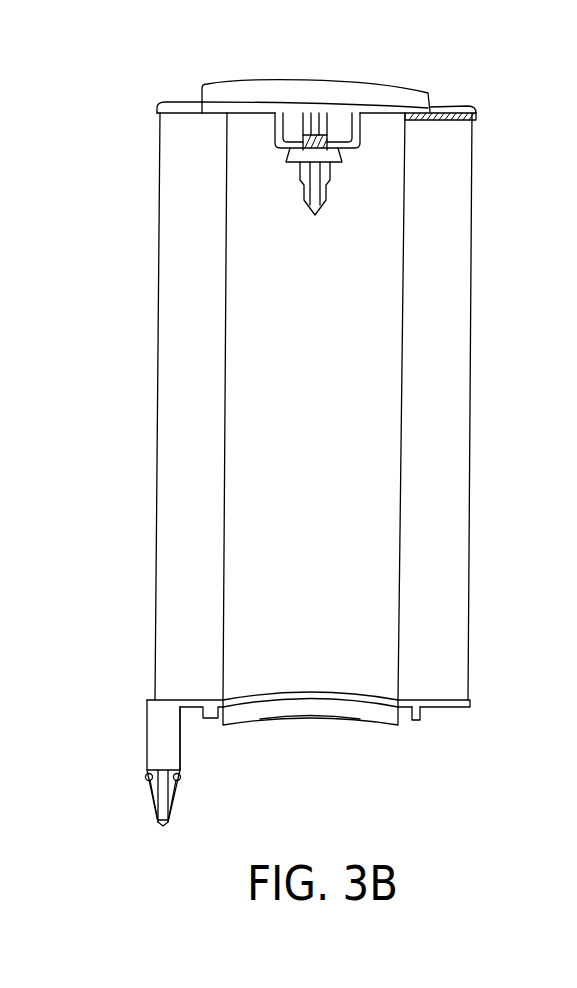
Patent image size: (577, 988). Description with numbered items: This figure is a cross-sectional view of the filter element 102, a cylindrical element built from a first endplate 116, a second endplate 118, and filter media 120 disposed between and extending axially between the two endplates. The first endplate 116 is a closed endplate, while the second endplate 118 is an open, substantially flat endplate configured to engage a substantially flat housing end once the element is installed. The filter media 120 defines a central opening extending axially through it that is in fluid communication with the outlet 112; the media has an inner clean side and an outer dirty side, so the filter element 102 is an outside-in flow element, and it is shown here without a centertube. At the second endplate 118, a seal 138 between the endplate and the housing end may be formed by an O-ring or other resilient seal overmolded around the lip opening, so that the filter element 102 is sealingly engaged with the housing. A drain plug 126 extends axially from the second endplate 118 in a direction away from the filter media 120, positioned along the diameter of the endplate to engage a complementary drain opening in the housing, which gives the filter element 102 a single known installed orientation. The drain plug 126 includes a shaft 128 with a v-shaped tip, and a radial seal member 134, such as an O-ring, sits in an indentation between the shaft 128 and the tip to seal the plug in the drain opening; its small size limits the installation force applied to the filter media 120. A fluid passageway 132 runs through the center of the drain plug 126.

The filter element 102 is at (100, 95).
The outlet 112 is at (308, 717).
The first endplate 116 is at (477, 112).
The second endplate 118 is at (471, 707).
The filter media 120 is at (180, 366).
The drain plug 126 is at (138, 723).
The shaft 128 is at (163, 755).
The fluid passageway 132 is at (163, 830).
The radial seal member 134 is at (145, 777).
The seal 138 is at (403, 723).